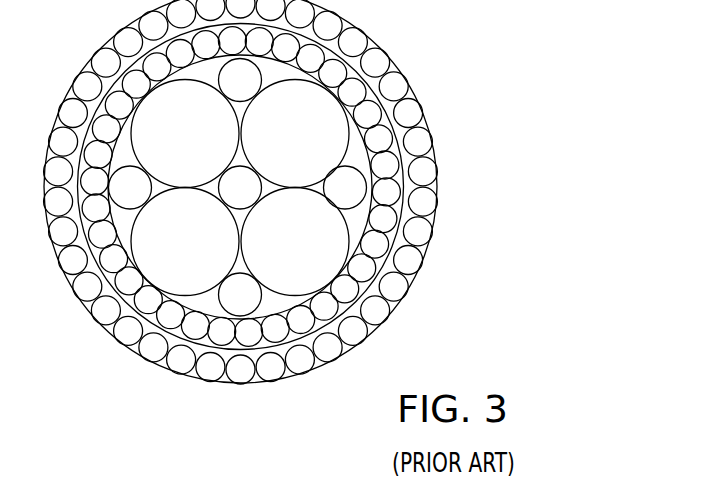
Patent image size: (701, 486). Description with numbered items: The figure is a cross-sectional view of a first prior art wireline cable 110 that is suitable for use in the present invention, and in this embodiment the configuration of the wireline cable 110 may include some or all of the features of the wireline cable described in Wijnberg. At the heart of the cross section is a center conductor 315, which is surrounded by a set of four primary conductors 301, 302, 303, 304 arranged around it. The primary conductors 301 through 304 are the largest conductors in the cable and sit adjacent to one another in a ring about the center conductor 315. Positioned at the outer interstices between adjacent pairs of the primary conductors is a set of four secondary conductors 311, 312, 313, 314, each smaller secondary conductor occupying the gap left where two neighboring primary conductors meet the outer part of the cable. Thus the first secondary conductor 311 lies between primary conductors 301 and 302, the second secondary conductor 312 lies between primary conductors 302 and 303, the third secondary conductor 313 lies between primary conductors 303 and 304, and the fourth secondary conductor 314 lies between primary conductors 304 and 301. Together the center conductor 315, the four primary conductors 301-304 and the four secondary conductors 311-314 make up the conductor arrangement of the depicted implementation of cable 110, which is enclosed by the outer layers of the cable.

The wireline cable 110 is at (249, 191).
The primary conductor 301 is at (185, 134).
The primary conductor 302 is at (295, 134).
The primary conductor 303 is at (295, 242).
The primary conductor 304 is at (185, 242).
The secondary conductor 311 is at (240, 80).
The secondary conductor 312 is at (345, 187).
The secondary conductor 313 is at (240, 294).
The secondary conductor 314 is at (130, 187).
The center conductor 315 is at (240, 187).